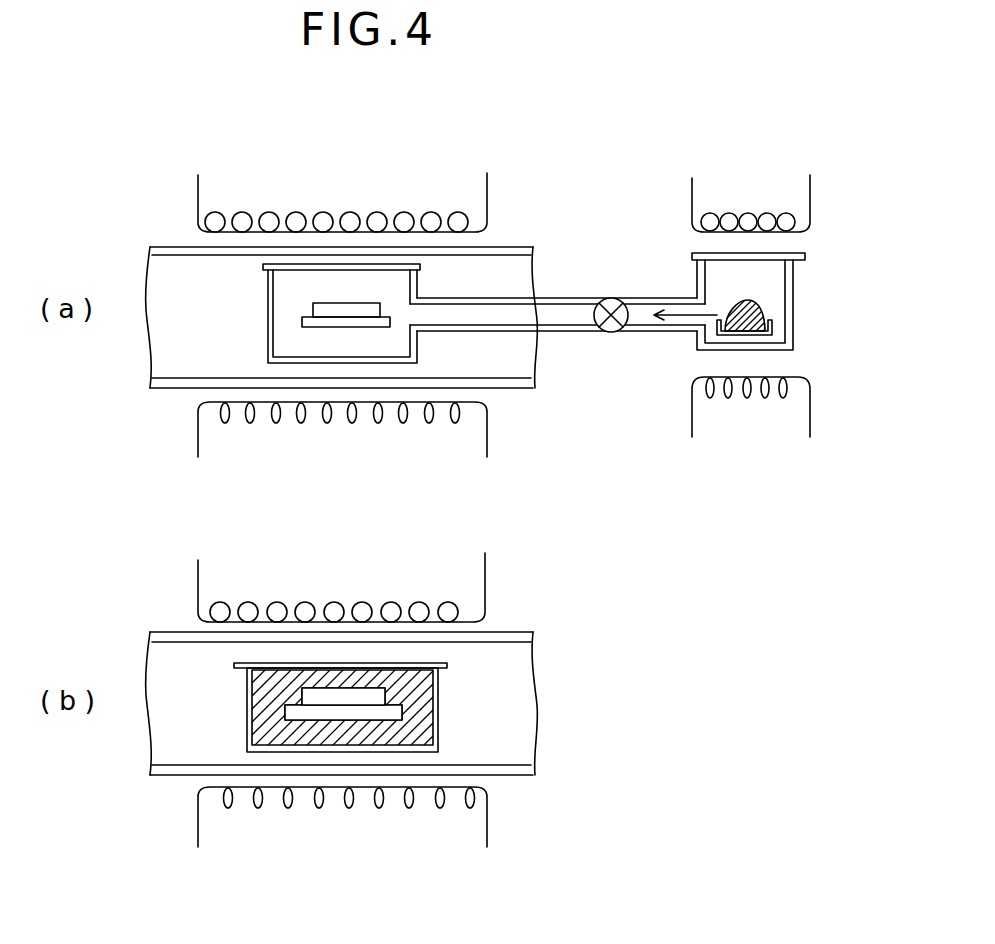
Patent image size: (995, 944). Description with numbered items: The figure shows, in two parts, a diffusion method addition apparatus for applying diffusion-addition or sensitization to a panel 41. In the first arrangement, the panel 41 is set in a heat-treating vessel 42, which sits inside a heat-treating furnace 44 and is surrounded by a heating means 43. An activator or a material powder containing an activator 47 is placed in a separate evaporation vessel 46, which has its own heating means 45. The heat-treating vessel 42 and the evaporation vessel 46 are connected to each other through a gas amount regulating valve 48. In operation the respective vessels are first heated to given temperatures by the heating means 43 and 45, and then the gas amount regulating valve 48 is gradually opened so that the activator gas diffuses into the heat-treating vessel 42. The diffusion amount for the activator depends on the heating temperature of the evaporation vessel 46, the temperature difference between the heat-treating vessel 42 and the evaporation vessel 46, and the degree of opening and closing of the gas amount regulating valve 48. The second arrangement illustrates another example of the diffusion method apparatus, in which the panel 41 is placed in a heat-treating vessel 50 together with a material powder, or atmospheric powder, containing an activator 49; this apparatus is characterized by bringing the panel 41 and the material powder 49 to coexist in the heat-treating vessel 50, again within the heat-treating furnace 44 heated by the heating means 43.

The panel 41 is at (292, 312).
The heat-treating vessel 42 is at (413, 278).
The heating means 43 is at (487, 191).
The heat-treating furnace 44 is at (510, 244).
The heating means 45 is at (810, 180).
The evaporation vessel 46 is at (772, 330).
The activator or material powder containing an activator 47 is at (757, 305).
The gas amount regulating valve 48 is at (607, 332).
The material powder (atmospheric powder) containing an activator 49 is at (418, 710).
The heat-treating vessel 50 is at (440, 678).